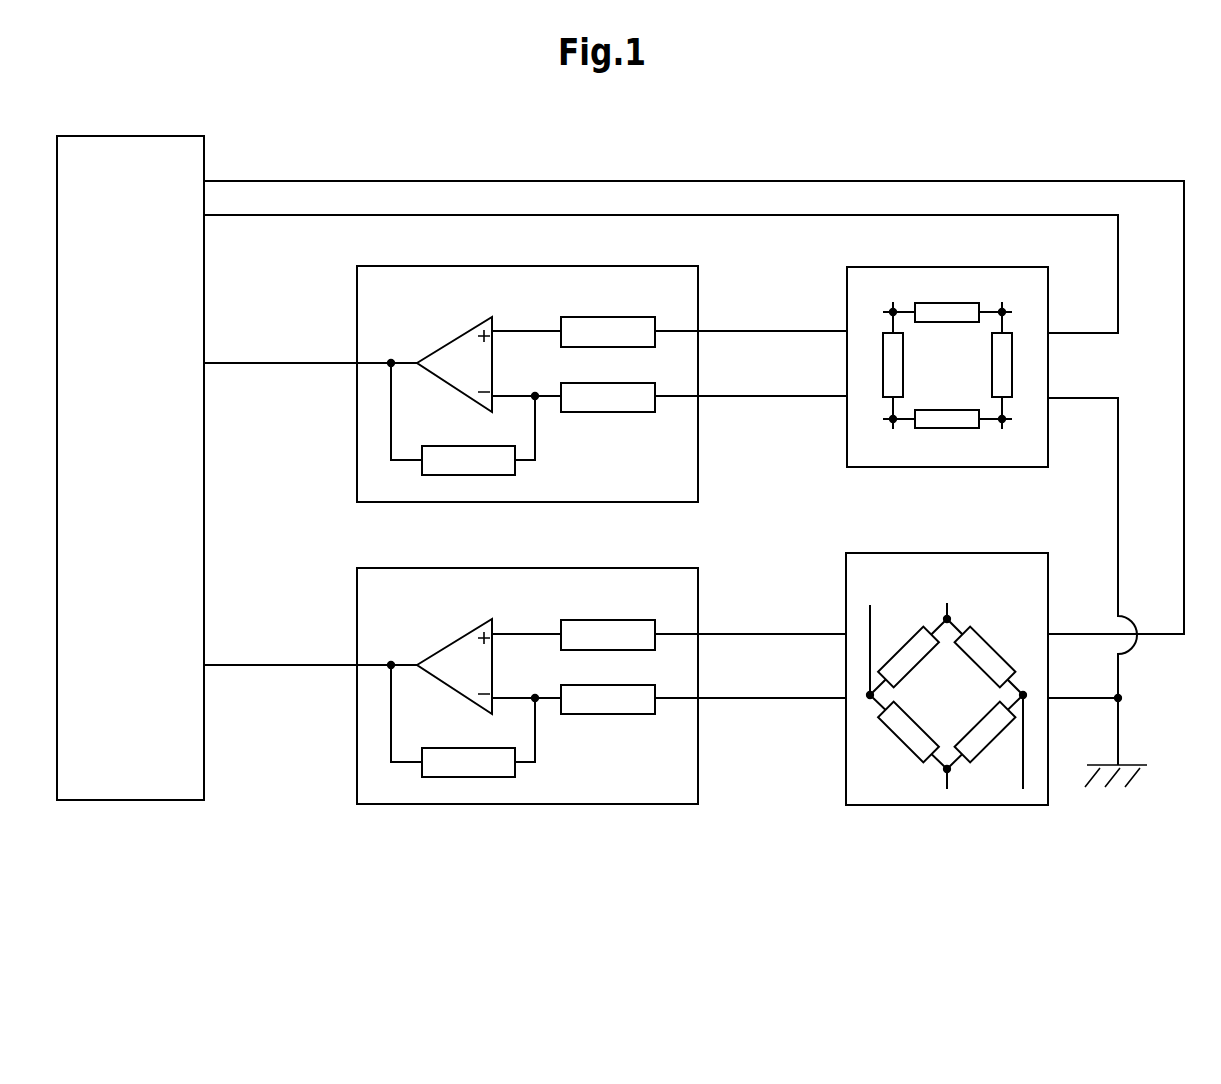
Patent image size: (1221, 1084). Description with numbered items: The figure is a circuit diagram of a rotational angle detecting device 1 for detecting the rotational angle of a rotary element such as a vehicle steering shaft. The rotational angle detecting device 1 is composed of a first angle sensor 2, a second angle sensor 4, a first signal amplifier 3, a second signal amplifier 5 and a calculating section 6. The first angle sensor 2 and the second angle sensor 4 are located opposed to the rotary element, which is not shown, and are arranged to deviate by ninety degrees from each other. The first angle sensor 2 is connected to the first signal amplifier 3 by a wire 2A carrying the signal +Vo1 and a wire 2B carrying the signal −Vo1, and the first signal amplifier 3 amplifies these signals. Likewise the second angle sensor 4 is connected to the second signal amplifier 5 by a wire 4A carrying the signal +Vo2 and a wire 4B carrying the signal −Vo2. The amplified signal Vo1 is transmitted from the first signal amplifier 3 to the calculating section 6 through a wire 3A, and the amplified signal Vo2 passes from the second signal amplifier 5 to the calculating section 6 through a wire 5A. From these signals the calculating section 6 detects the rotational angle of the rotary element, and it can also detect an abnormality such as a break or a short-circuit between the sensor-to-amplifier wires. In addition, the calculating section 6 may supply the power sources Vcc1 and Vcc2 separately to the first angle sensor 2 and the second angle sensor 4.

The rotational angle detecting device 1 is at (995, 145).
The first angle sensor 2 is at (1005, 267).
The wire 2A is at (826, 331).
The wire 2B is at (826, 396).
The first signal amplifier 3 is at (377, 266).
The wire 3A is at (326, 362).
The second angle sensor 4 is at (1005, 553).
The wire 4A is at (826, 633).
The wire 4B is at (826, 697).
The second signal amplifier 5 is at (377, 568).
The wire 5A is at (326, 664).
The calculating section 6 is at (176, 136).